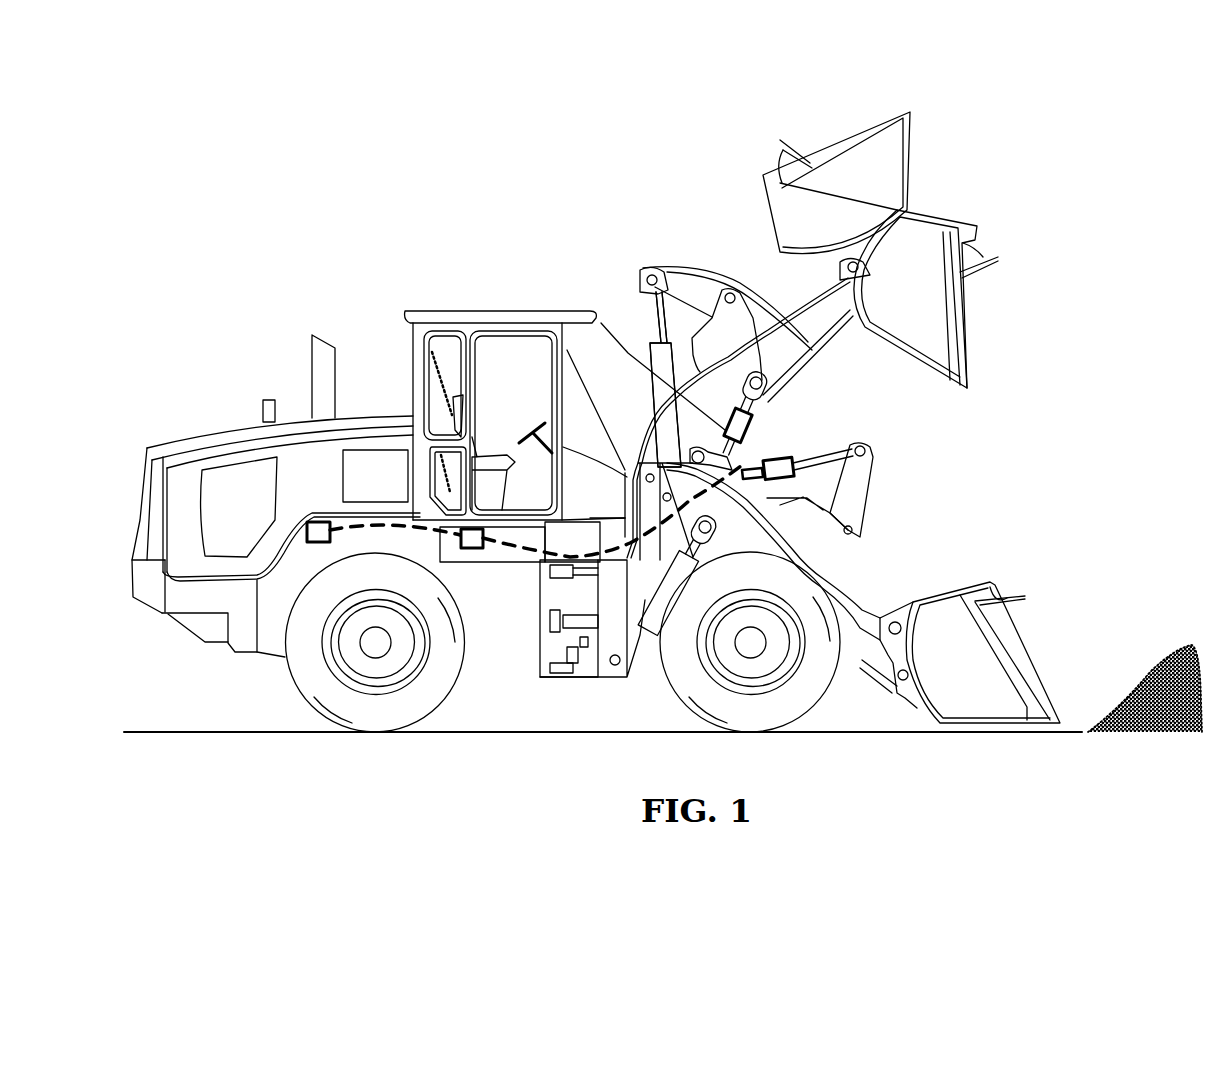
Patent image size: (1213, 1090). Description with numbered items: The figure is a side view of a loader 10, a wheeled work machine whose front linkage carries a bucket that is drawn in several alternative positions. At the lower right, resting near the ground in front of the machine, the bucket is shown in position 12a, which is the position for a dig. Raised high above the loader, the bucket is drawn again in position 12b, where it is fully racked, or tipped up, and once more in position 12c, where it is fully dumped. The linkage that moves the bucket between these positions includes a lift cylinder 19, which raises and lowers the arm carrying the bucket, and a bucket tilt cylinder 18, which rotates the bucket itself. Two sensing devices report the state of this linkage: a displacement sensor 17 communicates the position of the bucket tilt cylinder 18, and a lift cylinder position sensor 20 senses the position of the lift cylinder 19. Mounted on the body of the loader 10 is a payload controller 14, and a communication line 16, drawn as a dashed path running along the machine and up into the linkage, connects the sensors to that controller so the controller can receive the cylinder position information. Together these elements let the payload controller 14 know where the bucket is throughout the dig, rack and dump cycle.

The loader 10 is at (487, 298).
The dig position of bucket 12a is at (990, 580).
The fully racked position of bucket 12b is at (897, 132).
The fully dumped position of bucket 12c is at (957, 227).
The payload controller 14 is at (472, 552).
The communication line 16 is at (745, 462).
The displacement sensor 17 is at (770, 462).
The bucket tilt cylinder 18 is at (803, 470).
The lift cylinder 19 is at (757, 410).
The lift cylinder position sensor 20 is at (697, 422).